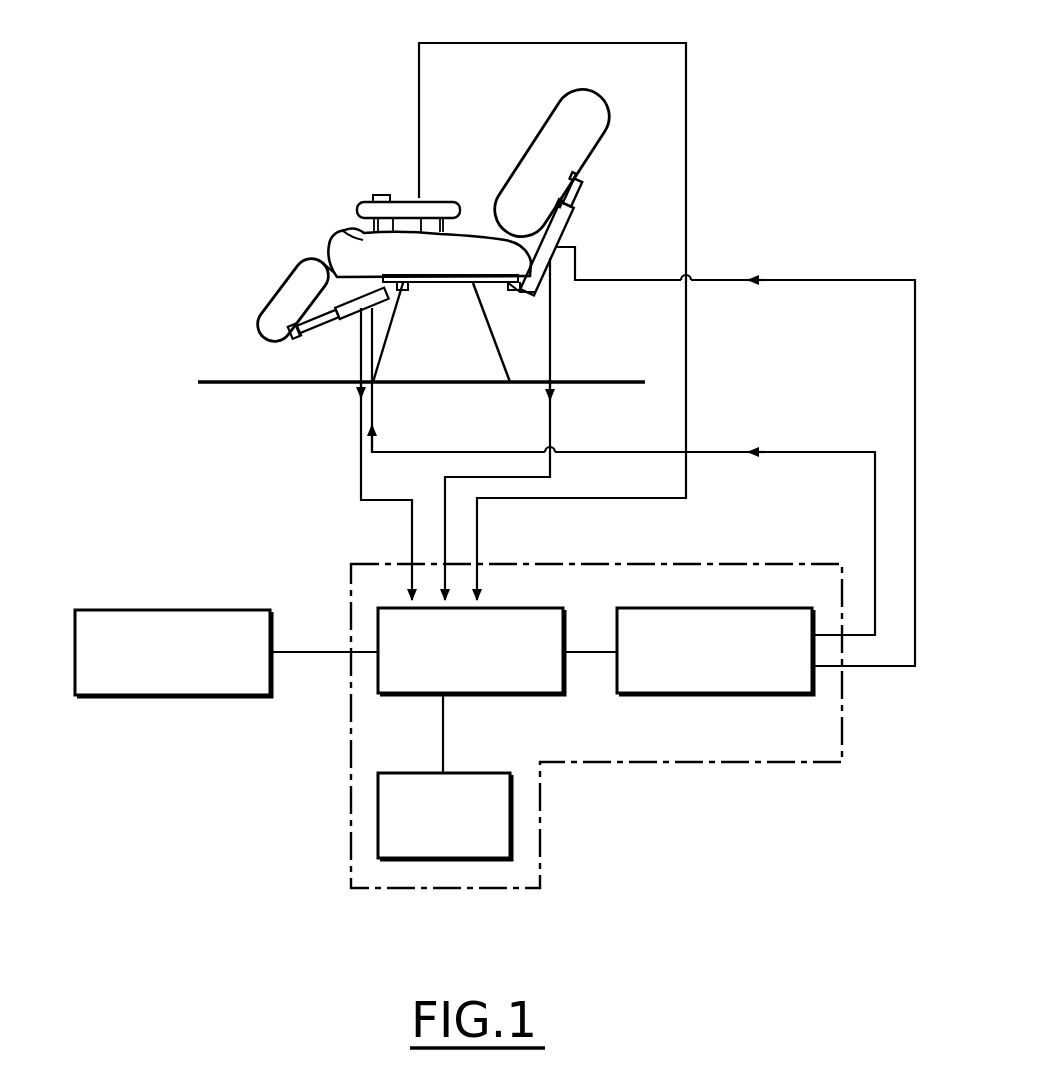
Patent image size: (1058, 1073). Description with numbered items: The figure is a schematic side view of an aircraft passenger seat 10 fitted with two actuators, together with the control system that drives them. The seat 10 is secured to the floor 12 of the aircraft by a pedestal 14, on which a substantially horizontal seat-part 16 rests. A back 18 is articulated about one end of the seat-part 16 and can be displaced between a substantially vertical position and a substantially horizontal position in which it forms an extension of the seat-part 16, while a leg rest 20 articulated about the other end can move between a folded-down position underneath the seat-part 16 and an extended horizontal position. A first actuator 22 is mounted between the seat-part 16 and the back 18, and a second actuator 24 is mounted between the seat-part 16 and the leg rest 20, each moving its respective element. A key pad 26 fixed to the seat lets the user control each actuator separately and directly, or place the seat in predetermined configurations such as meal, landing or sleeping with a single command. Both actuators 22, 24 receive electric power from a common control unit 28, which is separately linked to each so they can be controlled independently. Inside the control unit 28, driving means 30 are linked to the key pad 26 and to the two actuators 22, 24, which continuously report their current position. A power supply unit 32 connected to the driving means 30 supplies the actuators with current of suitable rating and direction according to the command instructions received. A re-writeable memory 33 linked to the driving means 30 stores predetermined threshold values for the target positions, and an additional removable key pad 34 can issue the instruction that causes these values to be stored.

The seat 10 is at (307, 233).
The floor 12 is at (255, 380).
The pedestal 14 is at (463, 358).
The seat-part 16 is at (336, 233).
The back 18 is at (568, 118).
The leg rest 20 is at (290, 290).
The first actuator 22 is at (566, 211).
The second actuator 24 is at (346, 320).
The key pad 26 is at (379, 195).
The common control unit 28 is at (560, 765).
The driving means 30 is at (494, 683).
The power supply unit 32 is at (774, 632).
The memory 33 is at (388, 835).
The additional removable key pad 34 is at (112, 686).